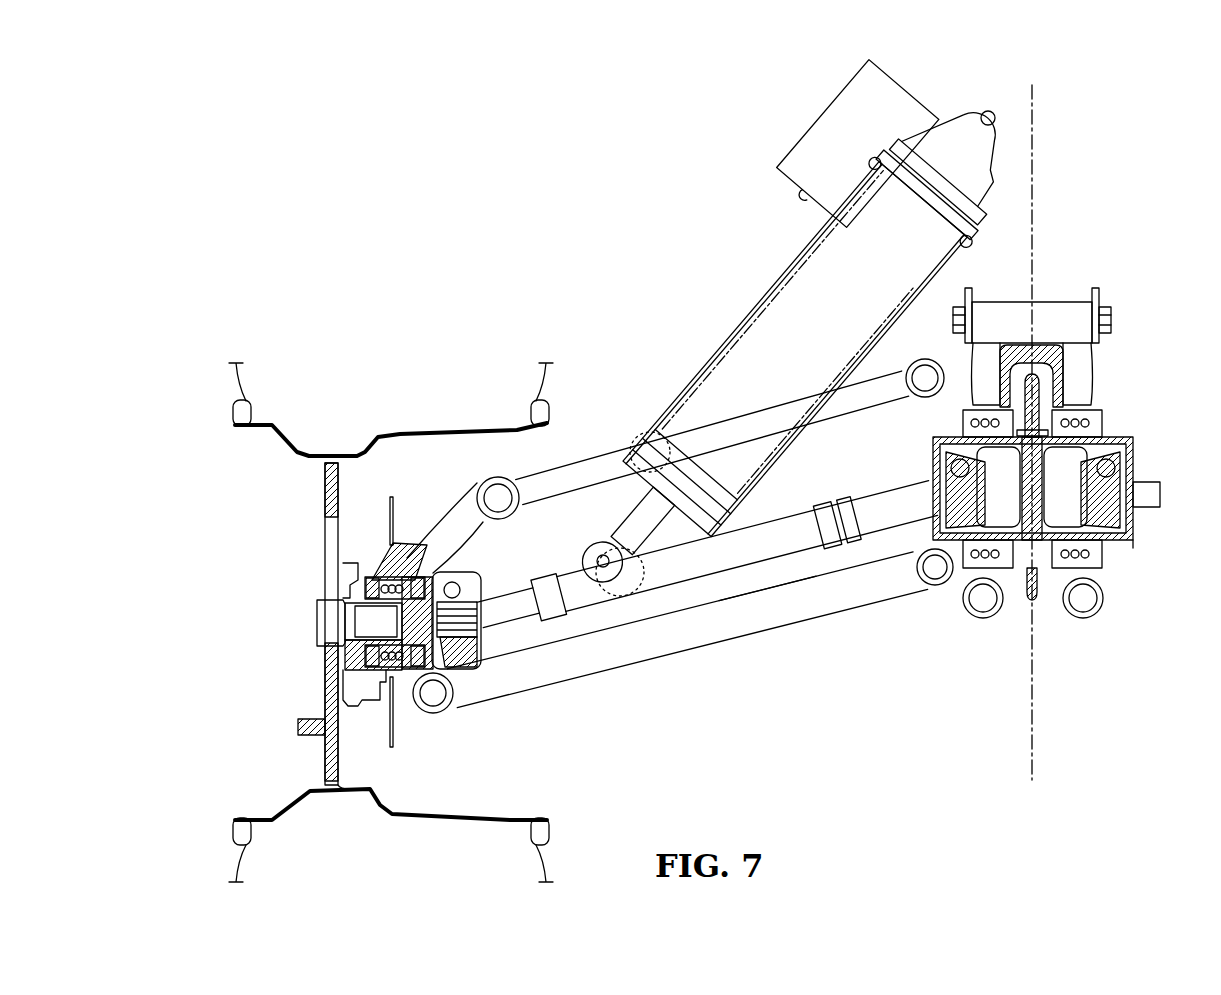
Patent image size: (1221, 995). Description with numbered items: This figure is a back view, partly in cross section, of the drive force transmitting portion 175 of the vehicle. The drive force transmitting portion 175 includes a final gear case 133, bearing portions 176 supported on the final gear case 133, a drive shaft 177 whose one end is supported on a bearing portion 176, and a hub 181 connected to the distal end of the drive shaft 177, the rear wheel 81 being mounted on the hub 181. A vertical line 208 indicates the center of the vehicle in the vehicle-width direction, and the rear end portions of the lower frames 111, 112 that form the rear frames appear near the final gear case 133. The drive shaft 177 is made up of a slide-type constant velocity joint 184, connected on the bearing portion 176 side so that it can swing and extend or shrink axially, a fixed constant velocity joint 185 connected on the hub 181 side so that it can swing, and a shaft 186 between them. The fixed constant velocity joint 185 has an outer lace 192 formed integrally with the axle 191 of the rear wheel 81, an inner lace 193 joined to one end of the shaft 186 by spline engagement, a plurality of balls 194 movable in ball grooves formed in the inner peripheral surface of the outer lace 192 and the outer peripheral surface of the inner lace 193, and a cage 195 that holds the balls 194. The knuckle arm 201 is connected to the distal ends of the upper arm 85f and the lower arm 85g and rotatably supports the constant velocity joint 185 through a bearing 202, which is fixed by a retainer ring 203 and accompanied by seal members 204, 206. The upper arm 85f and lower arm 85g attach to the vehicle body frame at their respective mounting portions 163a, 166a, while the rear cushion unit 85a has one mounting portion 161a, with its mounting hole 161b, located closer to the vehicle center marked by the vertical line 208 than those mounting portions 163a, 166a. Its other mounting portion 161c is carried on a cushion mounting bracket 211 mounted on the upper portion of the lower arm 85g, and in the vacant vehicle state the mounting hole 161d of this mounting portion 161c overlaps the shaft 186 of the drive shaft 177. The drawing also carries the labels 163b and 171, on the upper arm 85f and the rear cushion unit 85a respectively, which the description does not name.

The rear wheel 81 is at (314, 556).
The rear cushion unit 85a is at (793, 287).
The upper arm 85f is at (604, 460).
The lower arm 85g is at (713, 625).
The lower frame 111 is at (983, 620).
The lower frame 112 is at (1085, 620).
The final gear case 133 is at (1040, 313).
The mounting portion 161a is at (971, 124).
The mounting hole 161b is at (994, 108).
The mounting portion 161c is at (617, 536).
The mounting hole 161d is at (748, 540).
The mounting portion 163a is at (925, 359).
The upper arm outer bushing 163b is at (505, 478).
The mounting portion 166a is at (957, 582).
The reservoir tank 171 is at (822, 150).
The drive force transmitting portion 175 is at (1140, 432).
The bearing portion 176 is at (1110, 410).
The drive shaft 177 is at (782, 566).
The hub 181 is at (363, 702).
The slide-type constant velocity joint 184 is at (900, 554).
The fixed constant velocity joint 185 is at (483, 678).
The shaft 186 is at (806, 532).
The axle 191 is at (363, 622).
The outer lace 192 is at (432, 567).
The inner lace 193 is at (517, 637).
The ball 194 is at (467, 573).
The cage 195 is at (462, 592).
The knuckle arm 201 is at (442, 512).
The bearing 202 is at (378, 560).
The retainer ring 203 is at (373, 575).
The seal member 204 is at (370, 655).
The seal member 206 is at (468, 682).
The vertical line 208 is at (1040, 167).
The cushion mounting bracket 211 is at (627, 612).